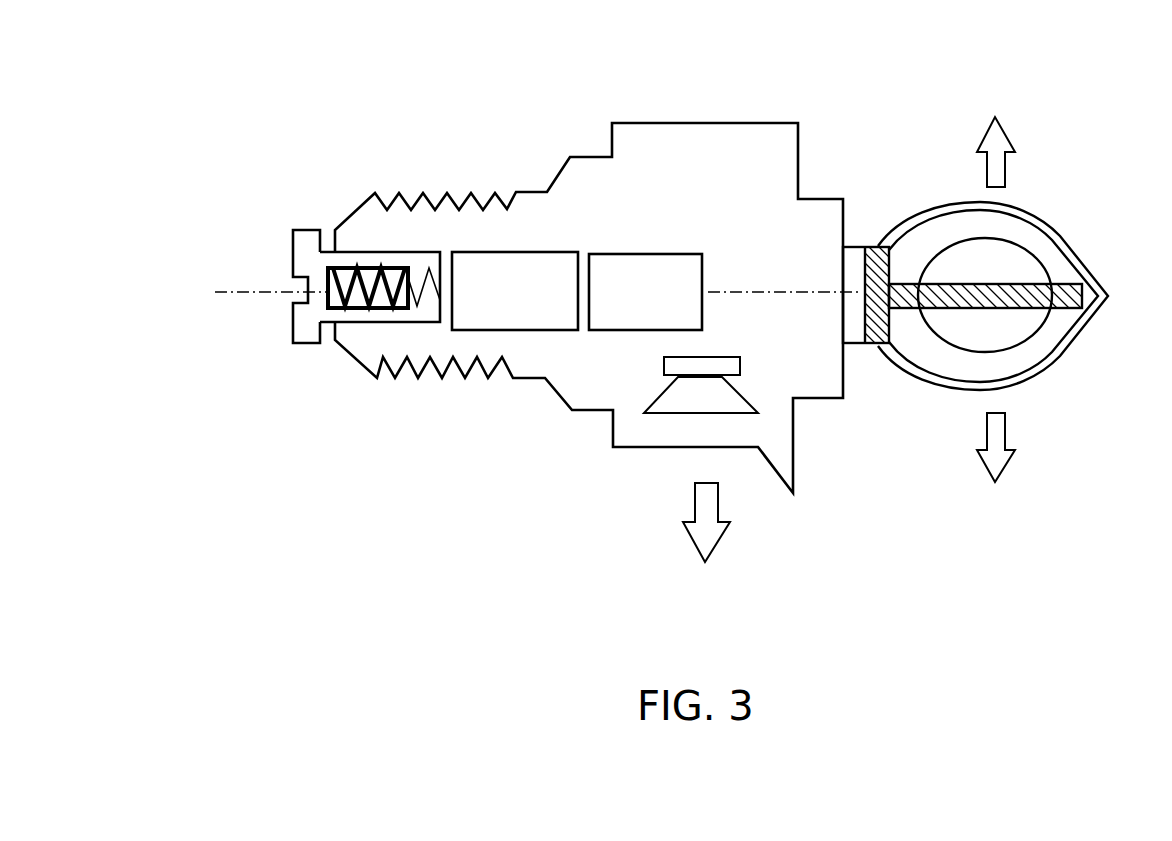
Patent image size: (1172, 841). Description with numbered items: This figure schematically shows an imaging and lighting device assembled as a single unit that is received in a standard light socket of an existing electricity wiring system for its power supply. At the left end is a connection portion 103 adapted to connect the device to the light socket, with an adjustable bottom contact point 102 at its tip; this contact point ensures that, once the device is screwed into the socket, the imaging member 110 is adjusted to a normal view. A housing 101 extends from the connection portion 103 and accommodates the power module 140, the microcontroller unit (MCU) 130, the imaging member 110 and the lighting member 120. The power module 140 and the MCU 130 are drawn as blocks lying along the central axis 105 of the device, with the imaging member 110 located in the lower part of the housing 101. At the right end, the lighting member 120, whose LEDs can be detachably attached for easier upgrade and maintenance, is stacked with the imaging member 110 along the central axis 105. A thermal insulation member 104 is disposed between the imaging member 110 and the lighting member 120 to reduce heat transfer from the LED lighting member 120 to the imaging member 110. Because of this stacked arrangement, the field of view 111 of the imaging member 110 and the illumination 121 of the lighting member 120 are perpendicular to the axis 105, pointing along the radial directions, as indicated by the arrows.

The housing 101 is at (552, 358).
The adjustable bottom contact point 102 is at (305, 317).
The connection portion 103 is at (383, 232).
The thermal insulation member 104 is at (850, 337).
The central axis 105 is at (787, 292).
The imaging member 110 is at (725, 398).
The field of view 111 is at (706, 544).
The lighting member 120 is at (980, 340).
The illumination 121 is at (996, 303).
The microcontroller unit (MCU) 130 is at (637, 254).
The power module 140 is at (517, 250).